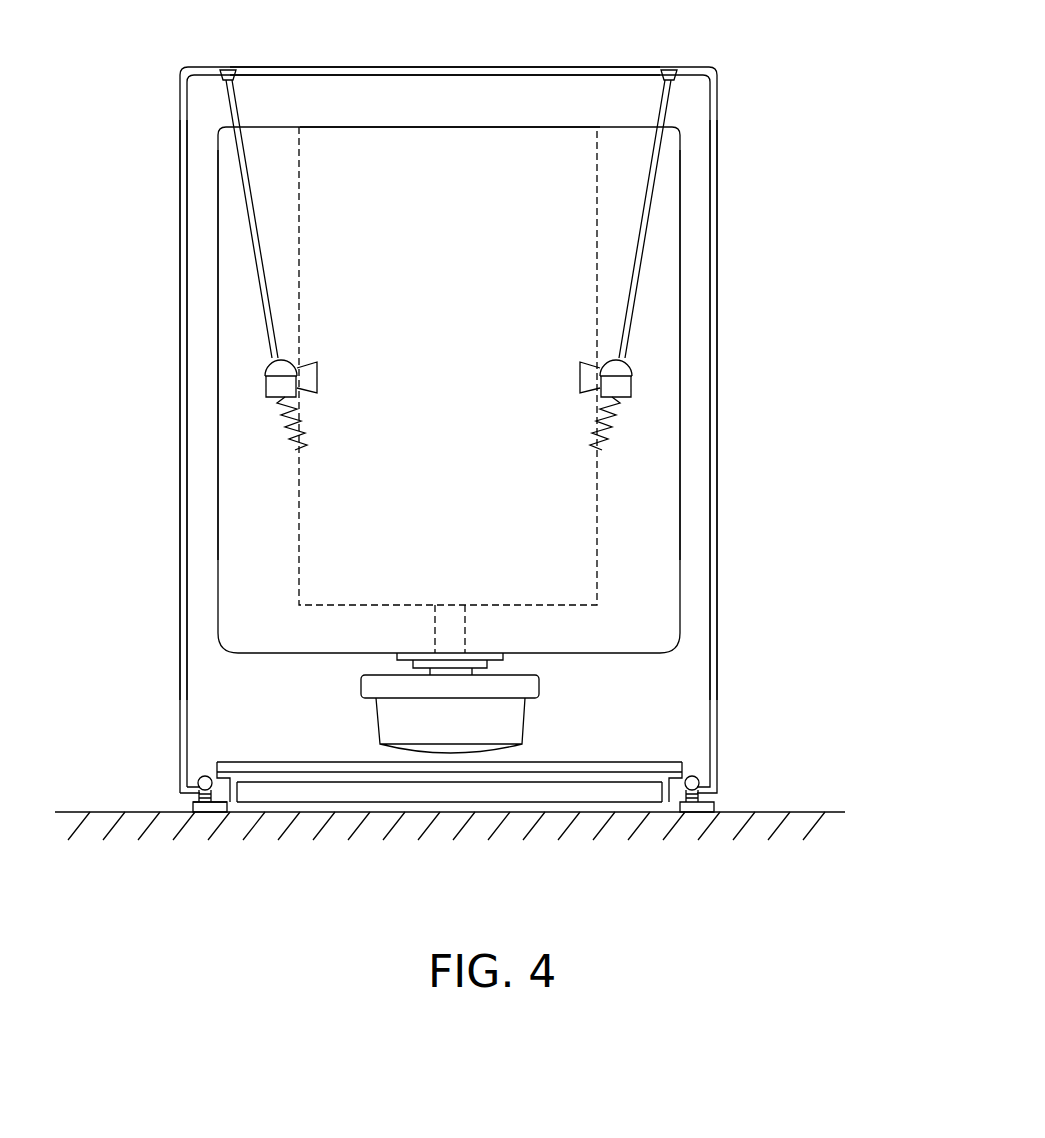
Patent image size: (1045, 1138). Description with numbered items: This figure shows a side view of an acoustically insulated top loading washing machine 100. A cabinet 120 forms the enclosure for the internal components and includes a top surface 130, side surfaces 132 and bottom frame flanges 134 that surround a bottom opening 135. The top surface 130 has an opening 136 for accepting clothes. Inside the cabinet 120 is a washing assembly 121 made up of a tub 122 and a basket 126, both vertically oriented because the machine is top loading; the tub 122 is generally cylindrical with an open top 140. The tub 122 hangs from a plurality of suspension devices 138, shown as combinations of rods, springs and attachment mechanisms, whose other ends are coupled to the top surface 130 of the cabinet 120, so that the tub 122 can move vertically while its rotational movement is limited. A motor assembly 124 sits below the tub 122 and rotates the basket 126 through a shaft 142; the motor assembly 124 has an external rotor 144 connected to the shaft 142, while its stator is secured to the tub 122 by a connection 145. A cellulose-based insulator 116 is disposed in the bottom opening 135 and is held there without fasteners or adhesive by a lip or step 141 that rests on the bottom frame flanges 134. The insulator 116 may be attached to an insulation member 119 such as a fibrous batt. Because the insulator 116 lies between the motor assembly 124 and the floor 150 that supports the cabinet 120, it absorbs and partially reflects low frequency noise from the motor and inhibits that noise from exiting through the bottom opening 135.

The washing machine 100 is at (167, 72).
The cellulose-based insulator 116 is at (645, 762).
The insulation member 119 is at (355, 780).
The cabinet 120 is at (718, 320).
The washing assembly 121 is at (686, 404).
The tub 122 is at (682, 568).
The motor assembly 124 is at (505, 720).
The basket 126 is at (603, 512).
The top surface 130 is at (722, 68).
The side surfaces 132 is at (180, 168).
The bottom frame flanges 134 is at (203, 778).
The bottom opening 135 is at (225, 812).
The opening 136 is at (272, 67).
The suspension devices 138 is at (257, 258).
The open top 140 is at (485, 127).
The lip or step 141 is at (688, 763).
The shaft 142 is at (468, 625).
The external rotor 144 is at (375, 720).
The connection 145 is at (500, 658).
The floor 150 is at (805, 812).